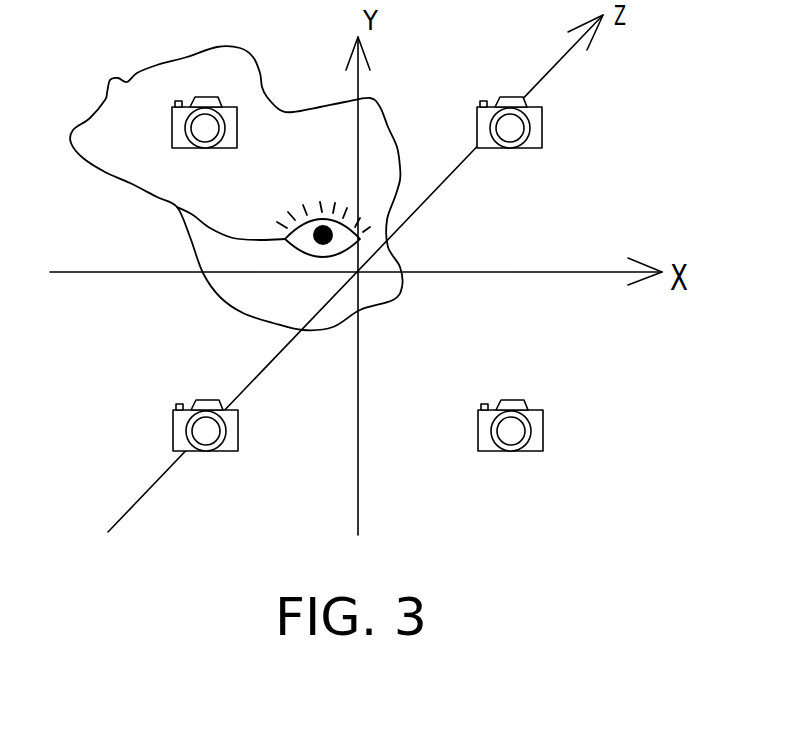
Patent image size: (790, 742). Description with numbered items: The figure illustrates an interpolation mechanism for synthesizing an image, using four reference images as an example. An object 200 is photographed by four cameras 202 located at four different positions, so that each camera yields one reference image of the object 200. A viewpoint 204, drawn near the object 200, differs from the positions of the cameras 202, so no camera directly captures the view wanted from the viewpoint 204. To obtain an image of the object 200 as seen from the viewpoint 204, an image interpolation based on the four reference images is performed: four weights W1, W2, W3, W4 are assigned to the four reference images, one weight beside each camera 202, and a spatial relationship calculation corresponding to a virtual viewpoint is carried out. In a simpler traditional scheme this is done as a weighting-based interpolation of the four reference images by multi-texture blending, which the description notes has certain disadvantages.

The object 200 is at (240, 47).
The cameras 202 is at (563, 408).
The viewpoint 204 is at (177, 207).
The weight W1 is at (223, 129).
The weight W2 is at (528, 129).
The weight W3 is at (224, 433).
The weight W4 is at (528, 430).